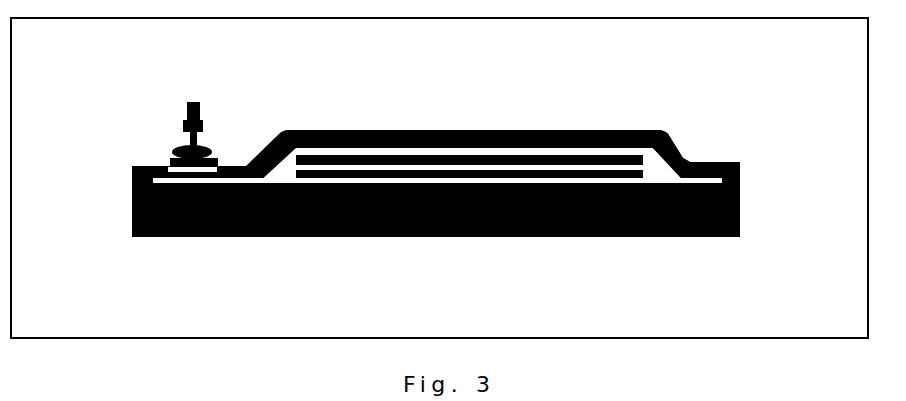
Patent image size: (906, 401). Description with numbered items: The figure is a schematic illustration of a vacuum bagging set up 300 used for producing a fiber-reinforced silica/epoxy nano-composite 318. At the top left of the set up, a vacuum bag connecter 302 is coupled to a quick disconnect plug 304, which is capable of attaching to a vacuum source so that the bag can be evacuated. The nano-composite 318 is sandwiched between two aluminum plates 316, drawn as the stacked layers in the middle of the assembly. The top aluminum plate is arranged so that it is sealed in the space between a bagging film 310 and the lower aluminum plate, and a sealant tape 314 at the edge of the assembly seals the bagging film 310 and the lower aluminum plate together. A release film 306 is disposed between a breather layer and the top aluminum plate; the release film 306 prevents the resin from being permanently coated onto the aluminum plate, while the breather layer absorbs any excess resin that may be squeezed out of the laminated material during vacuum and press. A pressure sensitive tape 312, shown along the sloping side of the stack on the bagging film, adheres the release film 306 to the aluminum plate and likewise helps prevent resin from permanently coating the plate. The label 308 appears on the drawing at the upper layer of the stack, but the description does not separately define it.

The vacuum bagging set up 300 is at (111, 277).
The vacuum bag connecter 302 is at (163, 148).
The quick disconnect plug 304 is at (206, 108).
The release film 306 is at (445, 147).
The insulating layer 308 is at (487, 147).
The bagging film 310 is at (597, 130).
The pressure sensitive tape 312 is at (682, 153).
The sealant tape 314 is at (740, 170).
The aluminum plates 316 is at (323, 157).
The fiber-reinforced silica/epoxy nano-composite 318 is at (393, 172).